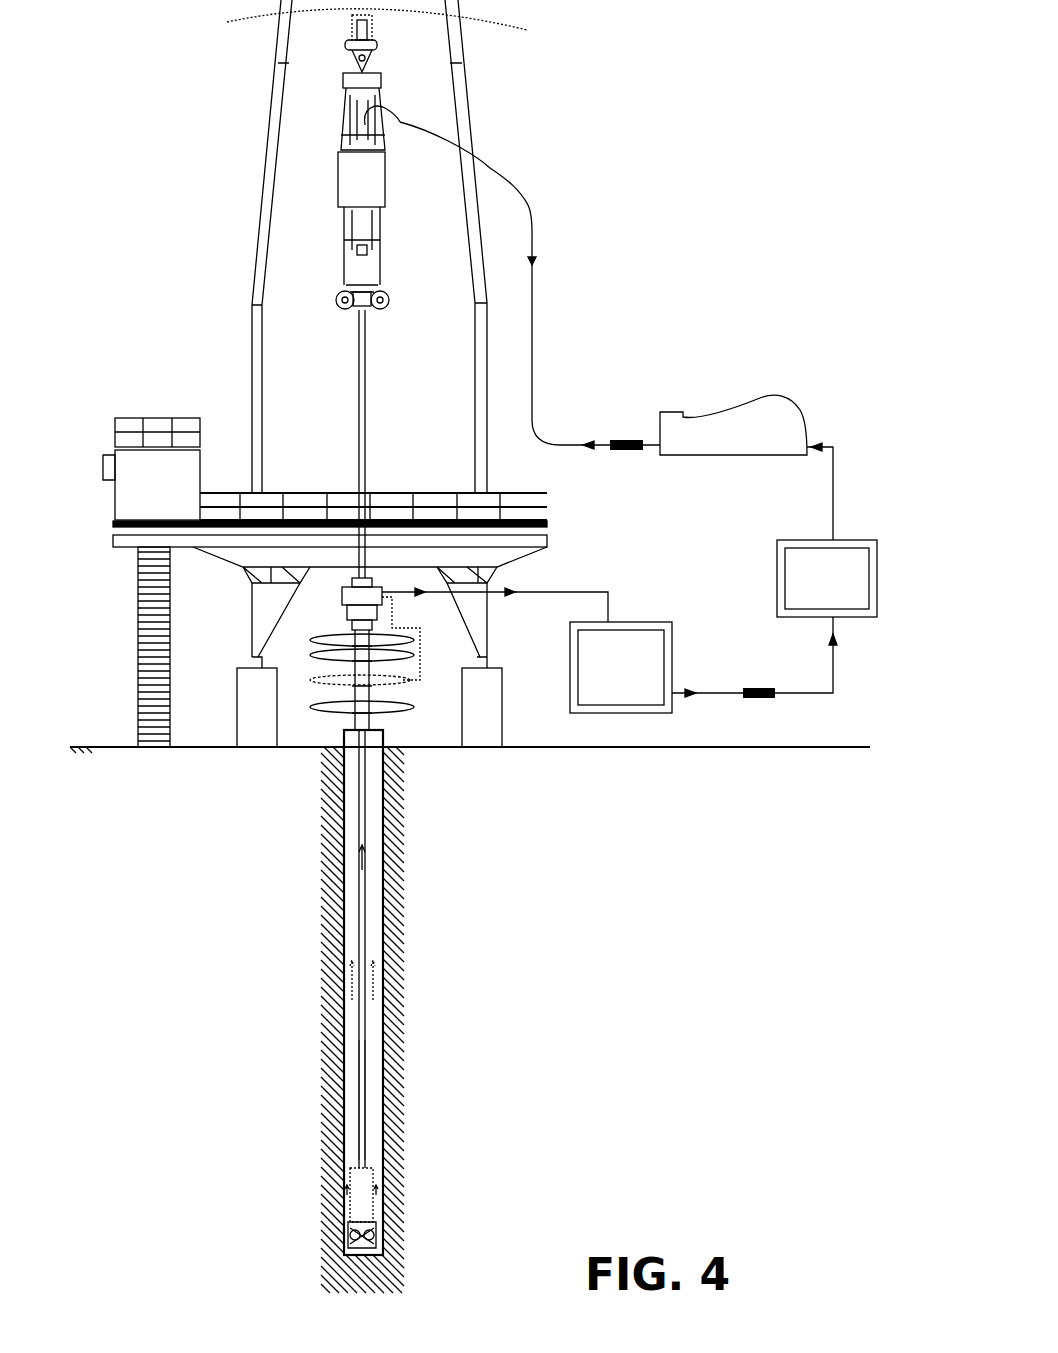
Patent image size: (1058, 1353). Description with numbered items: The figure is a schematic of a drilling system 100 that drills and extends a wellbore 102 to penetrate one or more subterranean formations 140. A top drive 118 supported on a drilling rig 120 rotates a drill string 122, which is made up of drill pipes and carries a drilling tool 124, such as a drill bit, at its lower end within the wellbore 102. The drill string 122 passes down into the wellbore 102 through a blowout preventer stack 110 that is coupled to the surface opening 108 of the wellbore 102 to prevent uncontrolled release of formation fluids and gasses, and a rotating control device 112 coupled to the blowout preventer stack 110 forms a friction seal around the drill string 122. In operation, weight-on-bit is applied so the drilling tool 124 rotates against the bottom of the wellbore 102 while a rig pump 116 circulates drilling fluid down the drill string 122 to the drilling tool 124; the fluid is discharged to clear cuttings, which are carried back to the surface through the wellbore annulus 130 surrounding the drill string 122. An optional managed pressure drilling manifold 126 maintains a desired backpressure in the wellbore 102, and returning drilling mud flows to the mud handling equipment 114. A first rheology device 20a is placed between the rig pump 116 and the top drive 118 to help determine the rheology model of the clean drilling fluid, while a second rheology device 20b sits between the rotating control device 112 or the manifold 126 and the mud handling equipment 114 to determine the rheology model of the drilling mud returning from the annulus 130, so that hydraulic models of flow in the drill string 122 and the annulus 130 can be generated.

The drilling system 100 is at (688, 172).
The top drive 118 is at (350, 177).
The drilling rig 120 is at (258, 240).
The drill string 122 is at (363, 400).
The rotating control device 112 is at (342, 597).
The blowout preventer stack 110 is at (380, 693).
The surface opening 108 is at (335, 724).
The wellbore annulus 130 is at (350, 893).
The subterranean formation 140 is at (290, 1032).
The wellbore 102 is at (382, 1078).
The drilling tool 124 is at (350, 1230).
The managed pressure drilling manifold 126 is at (640, 678).
The mud handling equipment 114 is at (846, 591).
The rig pump 116 is at (773, 438).
The first rheology device 20a is at (620, 445).
The second rheology device 20b is at (760, 692).